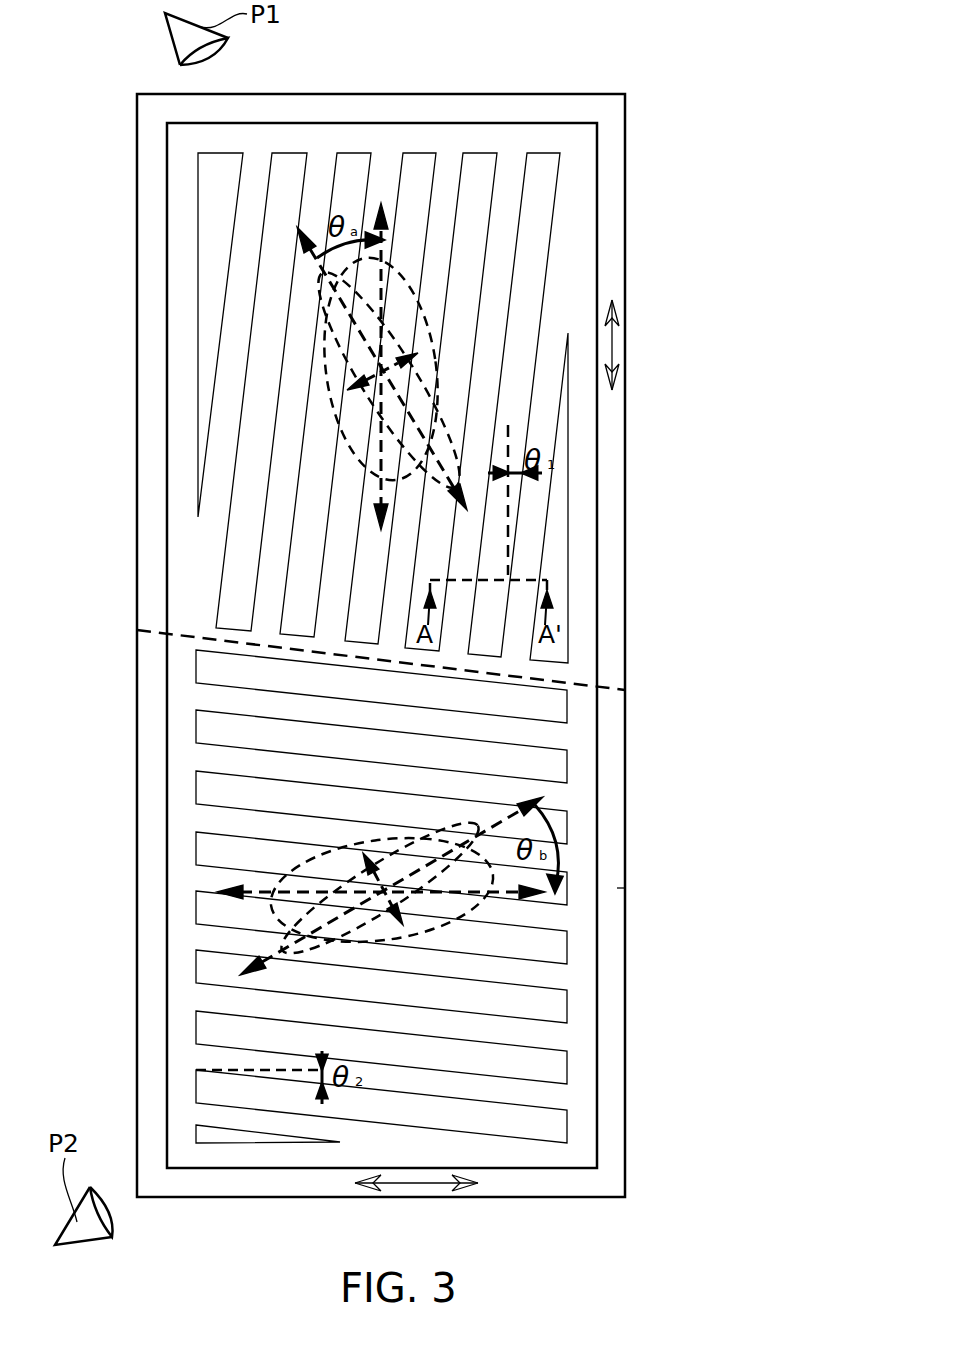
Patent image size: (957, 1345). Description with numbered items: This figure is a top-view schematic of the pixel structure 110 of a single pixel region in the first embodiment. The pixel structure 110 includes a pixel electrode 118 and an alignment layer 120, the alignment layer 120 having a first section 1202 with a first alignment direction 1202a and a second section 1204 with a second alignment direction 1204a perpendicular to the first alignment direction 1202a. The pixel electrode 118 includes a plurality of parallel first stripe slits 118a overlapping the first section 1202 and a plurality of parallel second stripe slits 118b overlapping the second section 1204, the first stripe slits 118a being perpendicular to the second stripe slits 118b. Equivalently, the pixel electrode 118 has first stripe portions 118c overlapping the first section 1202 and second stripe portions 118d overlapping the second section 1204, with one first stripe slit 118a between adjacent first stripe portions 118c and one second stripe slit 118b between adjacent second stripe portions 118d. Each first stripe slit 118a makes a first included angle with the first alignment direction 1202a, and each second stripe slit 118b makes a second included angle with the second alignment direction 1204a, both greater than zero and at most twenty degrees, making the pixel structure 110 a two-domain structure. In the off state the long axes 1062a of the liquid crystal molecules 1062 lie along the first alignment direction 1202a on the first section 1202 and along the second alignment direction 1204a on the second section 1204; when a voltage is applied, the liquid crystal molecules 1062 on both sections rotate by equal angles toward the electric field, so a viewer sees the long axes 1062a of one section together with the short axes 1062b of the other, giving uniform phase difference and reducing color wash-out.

The pixel structure 110 is at (688, 72).
The pixel electrode 118 is at (597, 240).
The first stripe slits 118a is at (359, 168).
The second stripe slits 118b is at (545, 697).
The first stripe portions 118c is at (258, 163).
The second stripe portions 118d is at (544, 737).
The alignment layer 120 is at (625, 203).
The first section 1202 is at (613, 540).
The first alignment direction 1202a is at (612, 348).
The second section 1204 is at (617, 888).
The second alignment direction 1204a is at (418, 1186).
The liquid crystal molecules 1062 is at (337, 327).
The long axes 1062a is at (323, 287).
The short axes 1062b is at (367, 377).